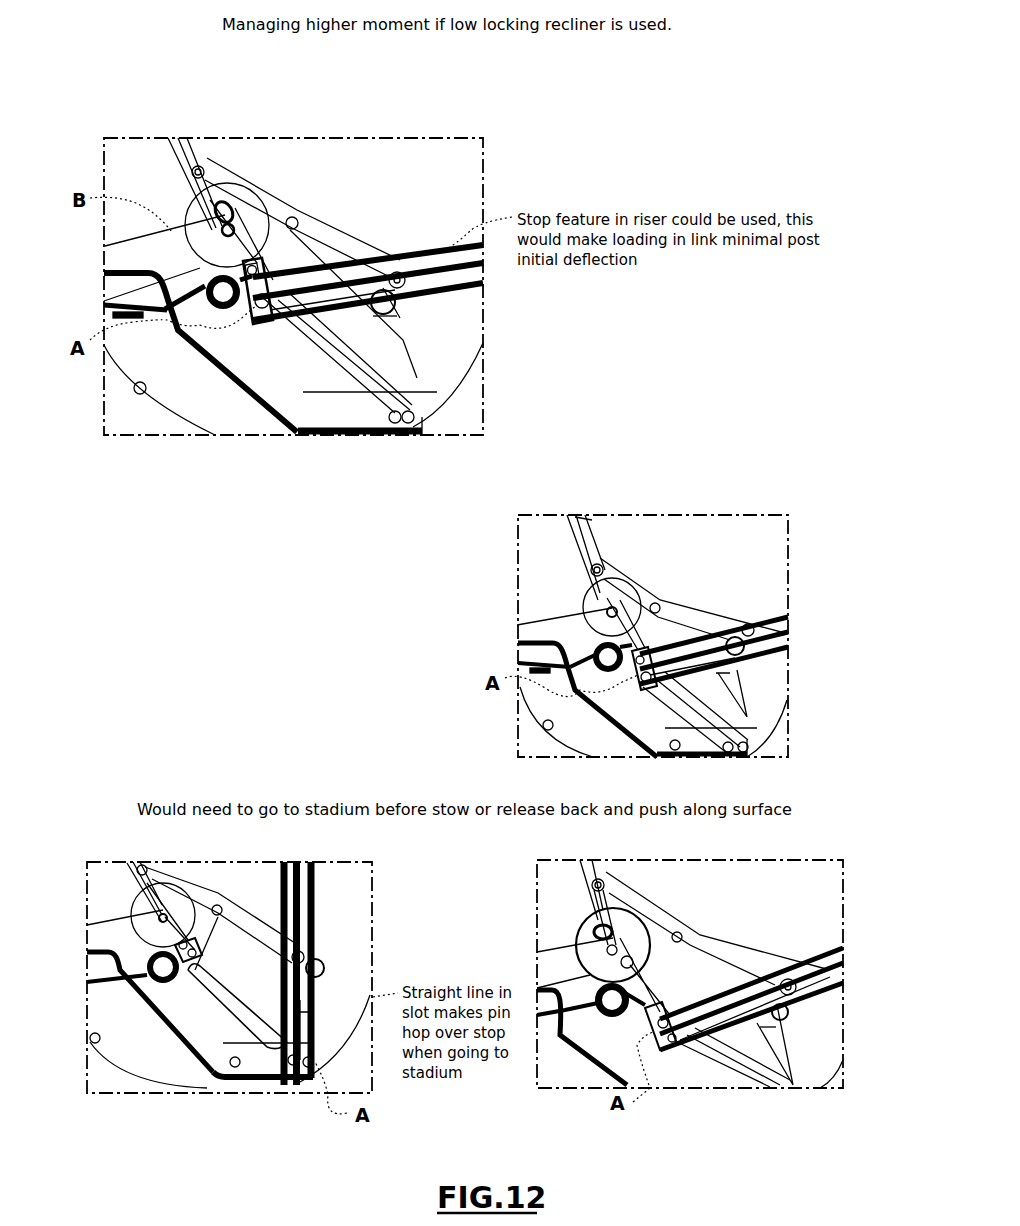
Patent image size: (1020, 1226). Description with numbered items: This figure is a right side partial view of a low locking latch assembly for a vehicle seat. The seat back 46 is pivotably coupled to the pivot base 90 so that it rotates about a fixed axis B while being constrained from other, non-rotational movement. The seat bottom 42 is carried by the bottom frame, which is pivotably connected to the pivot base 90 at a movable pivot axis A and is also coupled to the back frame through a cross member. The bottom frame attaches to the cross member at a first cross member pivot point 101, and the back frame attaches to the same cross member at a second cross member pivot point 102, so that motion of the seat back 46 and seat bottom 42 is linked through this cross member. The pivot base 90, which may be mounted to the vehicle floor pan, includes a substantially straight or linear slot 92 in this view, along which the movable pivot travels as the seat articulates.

The seat back 46 is at (190, 157).
The second cross member pivot point 102 is at (232, 172).
The first cross member pivot point 101 is at (414, 257).
The seat bottom 42 is at (460, 292).
The pivot base 90 is at (330, 416).
The slot 92 is at (418, 414).